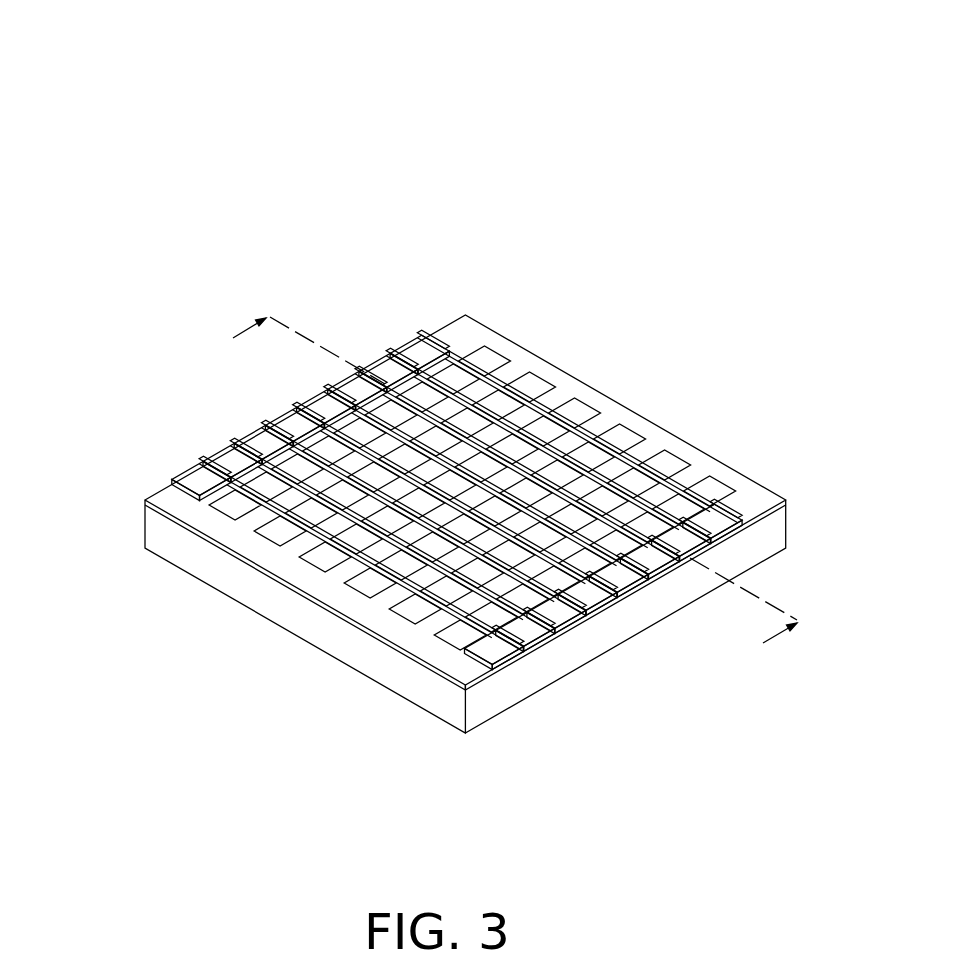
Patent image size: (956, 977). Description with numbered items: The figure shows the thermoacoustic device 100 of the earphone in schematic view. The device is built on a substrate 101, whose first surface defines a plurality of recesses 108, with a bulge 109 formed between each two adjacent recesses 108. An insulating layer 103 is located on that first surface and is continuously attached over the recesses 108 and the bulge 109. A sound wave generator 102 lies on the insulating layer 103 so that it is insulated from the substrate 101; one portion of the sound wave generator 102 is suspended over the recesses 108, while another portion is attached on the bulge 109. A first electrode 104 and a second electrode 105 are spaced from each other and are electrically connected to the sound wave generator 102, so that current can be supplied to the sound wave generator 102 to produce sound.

The thermoacoustic device 100 is at (446, 392).
The substrate 101 is at (162, 530).
The sound wave generator 102 is at (305, 402).
The insulating layer 103 is at (150, 502).
The first electrode 104 is at (230, 456).
The second electrode 105 is at (493, 649).
The recesses 108 is at (594, 561).
The bulge 109 is at (680, 504).